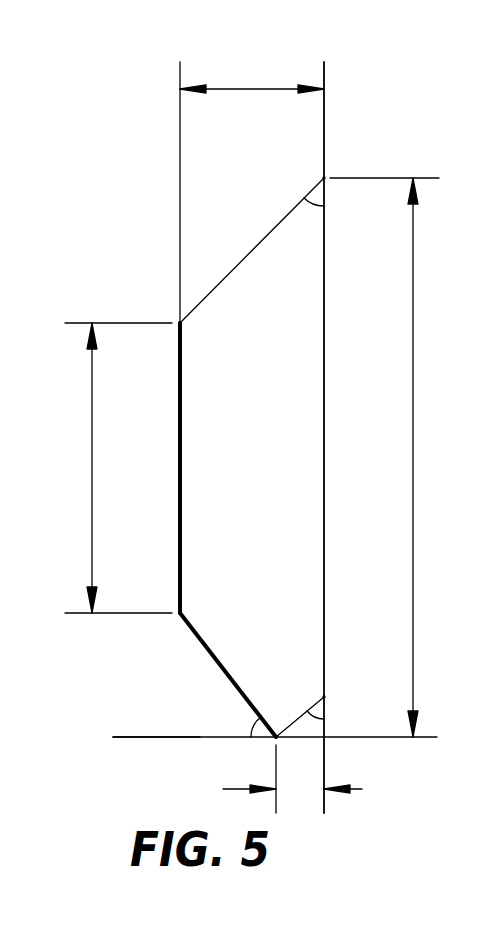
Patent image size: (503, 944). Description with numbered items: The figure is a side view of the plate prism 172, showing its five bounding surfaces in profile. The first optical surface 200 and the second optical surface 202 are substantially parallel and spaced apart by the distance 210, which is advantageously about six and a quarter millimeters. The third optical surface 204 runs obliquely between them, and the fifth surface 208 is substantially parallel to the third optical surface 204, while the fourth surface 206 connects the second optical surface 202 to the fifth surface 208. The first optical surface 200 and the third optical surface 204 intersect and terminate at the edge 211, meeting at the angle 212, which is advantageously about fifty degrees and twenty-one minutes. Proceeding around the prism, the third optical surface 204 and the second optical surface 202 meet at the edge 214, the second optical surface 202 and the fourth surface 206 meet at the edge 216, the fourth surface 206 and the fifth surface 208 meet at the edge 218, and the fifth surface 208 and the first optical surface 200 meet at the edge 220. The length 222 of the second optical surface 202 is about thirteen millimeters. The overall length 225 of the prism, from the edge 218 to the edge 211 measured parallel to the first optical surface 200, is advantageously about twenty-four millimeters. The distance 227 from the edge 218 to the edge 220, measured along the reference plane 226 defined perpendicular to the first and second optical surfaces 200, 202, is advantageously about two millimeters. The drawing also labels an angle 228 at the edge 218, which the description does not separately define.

The plate prism 172 is at (116, 90).
The surface S1 200 is at (325, 352).
The surface S2 202 is at (177, 545).
The surface S3 204 is at (270, 232).
The surface S4 206 is at (211, 655).
The surface S5 208 is at (327, 713).
The distance 210 is at (255, 88).
The edge 211 is at (325, 178).
The angle 212 is at (327, 210).
The edge 214 is at (178, 322).
The edge 216 is at (176, 616).
The edge 218 is at (270, 745).
The edge 220 is at (325, 697).
The length of surface S2 222 is at (91, 470).
The overall length of the prism 225 is at (415, 388).
The reference plane 226 is at (158, 740).
The distance 227 is at (362, 789).
The bottom angle 228 is at (250, 729).